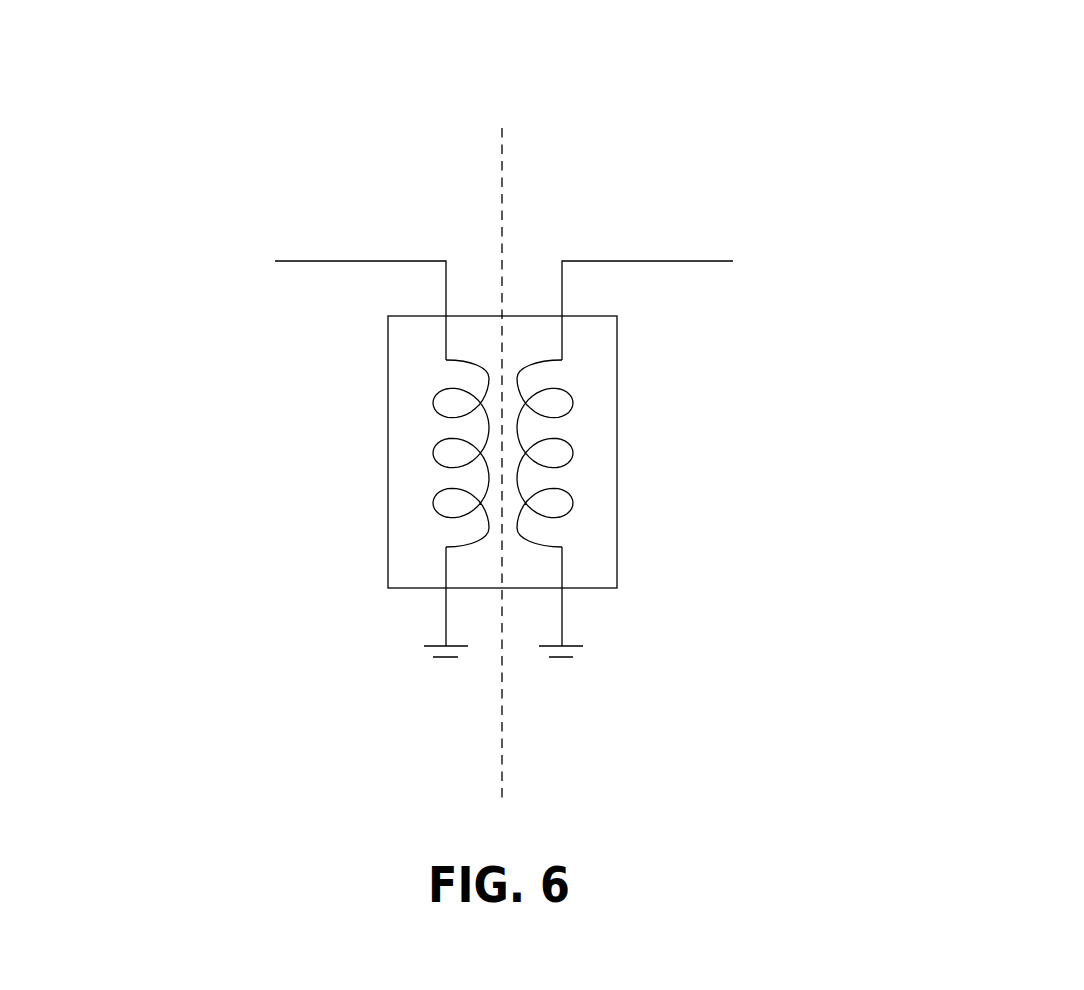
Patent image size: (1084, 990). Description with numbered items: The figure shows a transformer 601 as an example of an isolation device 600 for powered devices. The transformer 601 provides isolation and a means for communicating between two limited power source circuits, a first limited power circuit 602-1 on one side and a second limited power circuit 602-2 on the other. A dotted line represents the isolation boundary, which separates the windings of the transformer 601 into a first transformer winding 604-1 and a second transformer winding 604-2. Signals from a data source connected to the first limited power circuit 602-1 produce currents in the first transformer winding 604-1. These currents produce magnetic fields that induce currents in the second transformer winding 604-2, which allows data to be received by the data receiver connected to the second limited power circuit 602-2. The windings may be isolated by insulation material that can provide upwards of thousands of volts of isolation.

The isolation device 600 is at (543, 64).
The transformer 601 is at (512, 315).
The Limited Power Circuit 1 602-1 is at (338, 113).
The Limited Power Circuit 2 602-2 is at (718, 113).
The first transformer winding 604-1 is at (404, 437).
The second transformer winding 604-2 is at (601, 485).